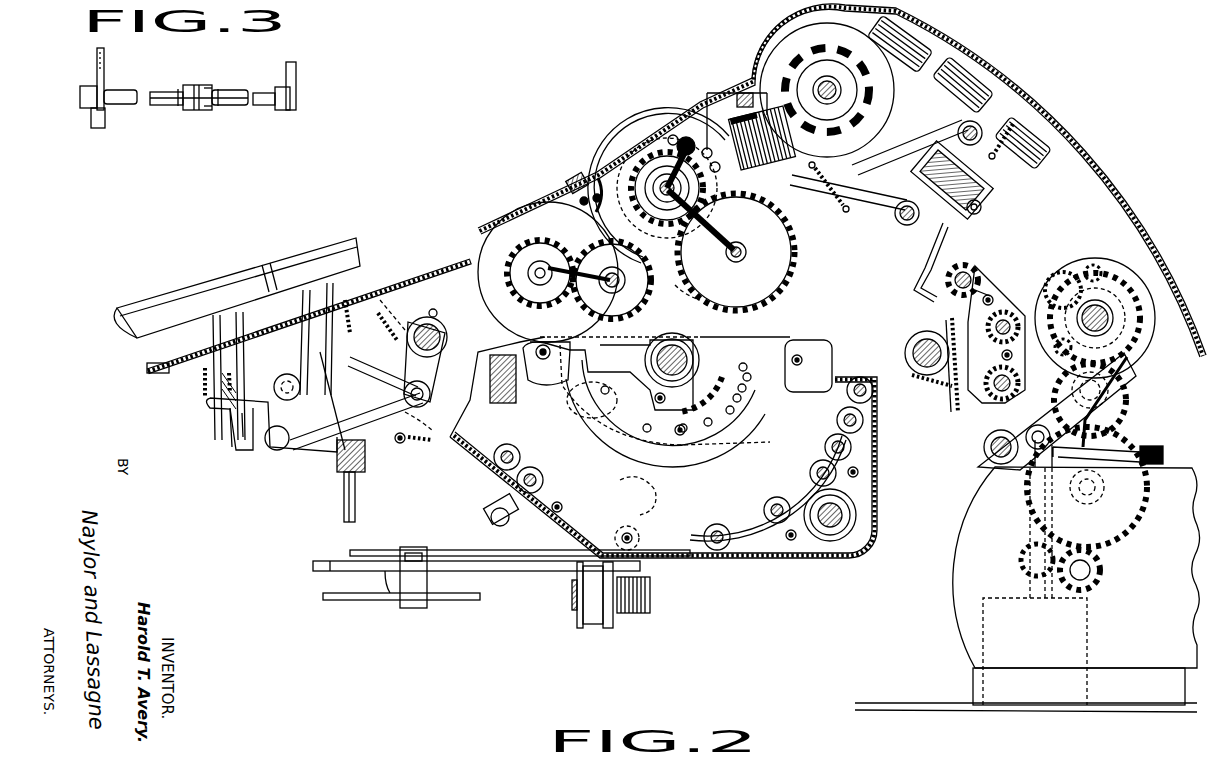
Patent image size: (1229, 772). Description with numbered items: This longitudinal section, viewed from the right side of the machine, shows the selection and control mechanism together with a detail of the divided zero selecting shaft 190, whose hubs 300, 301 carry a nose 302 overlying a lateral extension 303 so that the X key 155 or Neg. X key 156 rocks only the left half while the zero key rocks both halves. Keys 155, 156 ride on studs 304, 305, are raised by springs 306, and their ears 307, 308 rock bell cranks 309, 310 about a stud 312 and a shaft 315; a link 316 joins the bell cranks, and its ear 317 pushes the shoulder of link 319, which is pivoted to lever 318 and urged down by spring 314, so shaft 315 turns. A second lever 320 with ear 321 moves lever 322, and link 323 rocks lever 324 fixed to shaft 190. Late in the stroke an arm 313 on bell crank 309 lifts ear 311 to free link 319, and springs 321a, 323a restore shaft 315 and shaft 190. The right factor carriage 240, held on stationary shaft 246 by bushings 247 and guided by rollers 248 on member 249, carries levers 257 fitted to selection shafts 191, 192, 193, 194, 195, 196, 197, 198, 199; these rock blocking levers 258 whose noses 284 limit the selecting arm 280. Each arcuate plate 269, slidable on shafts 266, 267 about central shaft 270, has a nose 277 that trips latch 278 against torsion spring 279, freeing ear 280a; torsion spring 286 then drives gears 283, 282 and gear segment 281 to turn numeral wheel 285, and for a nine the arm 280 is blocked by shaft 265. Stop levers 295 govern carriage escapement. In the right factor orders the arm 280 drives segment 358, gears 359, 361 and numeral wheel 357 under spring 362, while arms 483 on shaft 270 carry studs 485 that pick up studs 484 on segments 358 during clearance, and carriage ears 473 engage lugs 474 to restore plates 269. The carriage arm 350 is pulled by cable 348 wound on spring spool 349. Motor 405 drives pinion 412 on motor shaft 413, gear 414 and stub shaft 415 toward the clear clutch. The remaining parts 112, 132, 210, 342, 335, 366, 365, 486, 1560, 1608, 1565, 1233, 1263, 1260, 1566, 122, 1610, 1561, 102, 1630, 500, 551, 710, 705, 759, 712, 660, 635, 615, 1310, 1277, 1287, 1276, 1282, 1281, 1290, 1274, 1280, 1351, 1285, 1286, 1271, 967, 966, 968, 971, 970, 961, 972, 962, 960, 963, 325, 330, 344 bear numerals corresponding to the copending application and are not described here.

In FIG. 3, the link 323 is at (96, 73).
In FIG. 2, the link 323 is at (465, 478).
In FIG. 3, the lever 324 is at (92, 117).
In FIG. 2, the lever 324 is at (462, 460).
In FIG. 3, the hub 300 is at (185, 85).
In FIG. 3, the nose 302 is at (196, 84).
In FIG. 3, the hub 301 is at (208, 86).
In FIG. 3, the lateral extension 303 is at (215, 98).
In FIG. 3, the lever arm 210 is at (296, 66).
In FIG. 3, the zero selecting shaft 190 is at (225, 105).
In FIG. 2, the zero selecting shaft 190 is at (497, 468).
In FIG. 2, the frame band 112 is at (540, 205).
In FIG. 2, the frame 132 is at (488, 212).
In FIG. 2, the numeral wheel 357 is at (500, 205).
In FIG. 2, the gear 361 is at (480, 240).
In FIG. 2, the spring 321a is at (378, 293).
In FIG. 2, the X key 155 is at (192, 300).
In FIG. 2, the Neg. X key 156 is at (305, 262).
In FIG. 2, the springs 306 is at (362, 315).
In FIG. 2, the stud 304 is at (212, 332).
In FIG. 2, the stud 305 is at (315, 325).
In FIG. 2, the ear 308 is at (345, 343).
In FIG. 2, the bell crank 310 is at (350, 360).
In FIG. 2, the link 316 is at (340, 400).
In FIG. 2, the stud 312 is at (284, 374).
In FIG. 2, the ear 307 is at (210, 402).
In FIG. 2, the bell crank 309 is at (212, 408).
In FIG. 2, the ear 311 is at (300, 460).
In FIG. 2, the arm 313 is at (330, 470).
In FIG. 2, the block 342 is at (342, 473).
In FIG. 2, the rod 335 is at (344, 517).
In FIG. 2, the lever 318 is at (432, 372).
In FIG. 2, the shaft 315 is at (447, 330).
In FIG. 2, the stop lever 295 is at (430, 396).
In FIG. 2, the second lever 320 is at (420, 318).
In FIG. 2, the ear 321 is at (416, 330).
In FIG. 2, the lever 322 is at (395, 342).
In FIG. 2, the spring 314 is at (400, 444).
In FIG. 2, the link 319 is at (398, 442).
In FIG. 2, the ear 317 is at (392, 450).
In FIG. 2, the second spring 323a is at (425, 470).
In FIG. 2, the selection shaft 191 is at (510, 505).
In FIG. 2, the stationary supporting member 249 is at (488, 515).
In FIG. 2, the rollers 248 is at (500, 528).
In FIG. 2, the number nine selection shaft 199 is at (545, 510).
In FIG. 2, the lug 474 is at (610, 505).
In FIG. 2, the ear 473 is at (572, 525).
In FIG. 2, the right factor carriage 240 is at (860, 555).
In FIG. 2, the segment 358 is at (745, 337).
In FIG. 2, the arcuate plate 269 is at (798, 345).
In FIG. 2, the lever 257 is at (862, 380).
In FIG. 2, the selection shaft 198 is at (872, 396).
In FIG. 2, the selection shaft 197 is at (863, 422).
In FIG. 2, the selection shaft 196 is at (851, 446).
In FIG. 2, the selection shaft 195 is at (836, 470).
In FIG. 2, the selection shaft 194 is at (780, 524).
In FIG. 2, the selection shaft 193 is at (750, 560).
In FIG. 2, the selection shaft 192 is at (648, 545).
In FIG. 2, the stationary shaft 246 is at (842, 515).
In FIG. 2, the bushings 247 is at (855, 505).
In FIG. 2, the nose 284 is at (745, 466).
In FIG. 2, the shaft 266 is at (745, 432).
In FIG. 2, the shaft 267 is at (640, 455).
In FIG. 2, the stud 366 is at (681, 438).
In FIG. 2, the blocking lever 258 is at (635, 495).
In FIG. 2, the stud 485 is at (642, 440).
In FIG. 2, the stud 484 is at (665, 431).
In FIG. 2, the arm 483 is at (655, 400).
In FIG. 2, the ear 280a is at (584, 400).
In FIG. 2, the selecting arm 280 is at (620, 340).
In FIG. 2, the lever 365 is at (628, 322).
In FIG. 2, the central shaft 270 is at (670, 340).
In FIG. 2, the latch 278 is at (530, 345).
In FIG. 2, the nose 277 is at (522, 360).
In FIG. 2, the spring 486 is at (505, 370).
In FIG. 2, the torsion spring 279 is at (560, 298).
In FIG. 2, the shaft 265 is at (533, 262).
In FIG. 2, the link 1560 is at (570, 262).
In FIG. 2, the gear 1608 is at (612, 280).
In FIG. 2, the spring 362 is at (600, 290).
In FIG. 2, the gear 282 is at (788, 275).
In FIG. 2, the torsion spring 286 is at (748, 254).
In FIG. 2, the gear segment 281 is at (742, 305).
In FIG. 2, the gear 359 is at (720, 256).
In FIG. 2, the dial gear 1565 is at (708, 189).
In FIG. 2, the dial 1233 is at (674, 170).
In FIG. 2, the pointer 1263 is at (684, 138).
In FIG. 2, the pinion 1260 is at (670, 136).
In FIG. 2, the stud 1566 is at (712, 162).
In FIG. 2, the numeral wheel 285 is at (622, 140).
In FIG. 2, the gear 283 is at (605, 160).
In FIG. 2, the bracket 122 is at (580, 176).
In FIG. 2, the pin 1610 is at (588, 180).
In FIG. 2, the pin 1561 is at (580, 195).
In FIG. 2, the frame block 102 is at (745, 90).
In FIG. 2, the coil 1630 is at (782, 165).
In FIG. 2, the cam disk 500 is at (800, 55).
In FIG. 2, the shaft 551 is at (832, 82).
In FIG. 2, the cylinder 710 is at (920, 30).
In FIG. 2, the cylinder 705 is at (978, 82).
In FIG. 2, the spring 759 is at (990, 130).
In FIG. 2, the cylinder 712 is at (1038, 160).
In FIG. 2, the solenoid 660 is at (985, 178).
In FIG. 2, the pivot 635 is at (918, 222).
In FIG. 2, the spring 615 is at (840, 212).
In FIG. 2, the link 1310 is at (922, 276).
In FIG. 2, the gear 1277 is at (962, 265).
In FIG. 2, the link 1287 is at (988, 290).
In FIG. 2, the gear 1276 is at (1005, 310).
In FIG. 2, the arm 1282 is at (958, 306).
In FIG. 2, the arm 1281 is at (945, 325).
In FIG. 2, the shaft 1290 is at (910, 355).
In FIG. 2, the bar 1274 is at (920, 380).
In FIG. 2, the shaft 1280 is at (985, 430).
In FIG. 2, the bushing 1351 is at (984, 452).
In FIG. 2, the plate 1285 is at (1057, 411).
In FIG. 2, the gear 1286 is at (1018, 360).
In FIG. 2, the gear 1271 is at (1018, 383).
In FIG. 2, the disk 967 is at (1122, 262).
In FIG. 2, the gear 966 is at (1140, 355).
In FIG. 2, the pinion 968 is at (1070, 272).
In FIG. 2, the shaft 971 is at (1115, 322).
In FIG. 2, the hub 970 is at (1120, 333).
In FIG. 2, the lever 961 is at (1138, 380).
In FIG. 2, the gear 972 is at (1130, 400).
In FIG. 2, the block 962 is at (1160, 446).
In FIG. 2, the electric motor 405 is at (940, 596).
In FIG. 2, the housing 960 is at (1088, 634).
In FIG. 2, the motor shaft 413 is at (1092, 568).
In FIG. 2, the pinion 412 is at (1098, 580).
In FIG. 2, the gear 414 is at (1122, 516).
In FIG. 2, the stub shaft 415 is at (1096, 490).
In FIG. 2, the rack 963 is at (1028, 492).
In FIG. 2, the right factor carriage arm 350 is at (385, 550).
In FIG. 2, the bar 325 is at (493, 572).
In FIG. 2, the bar 330 is at (415, 602).
In FIG. 2, the flexible cable 348 is at (606, 626).
In FIG. 2, the spool 349 is at (586, 628).
In FIG. 2, the coil 344 is at (640, 613).